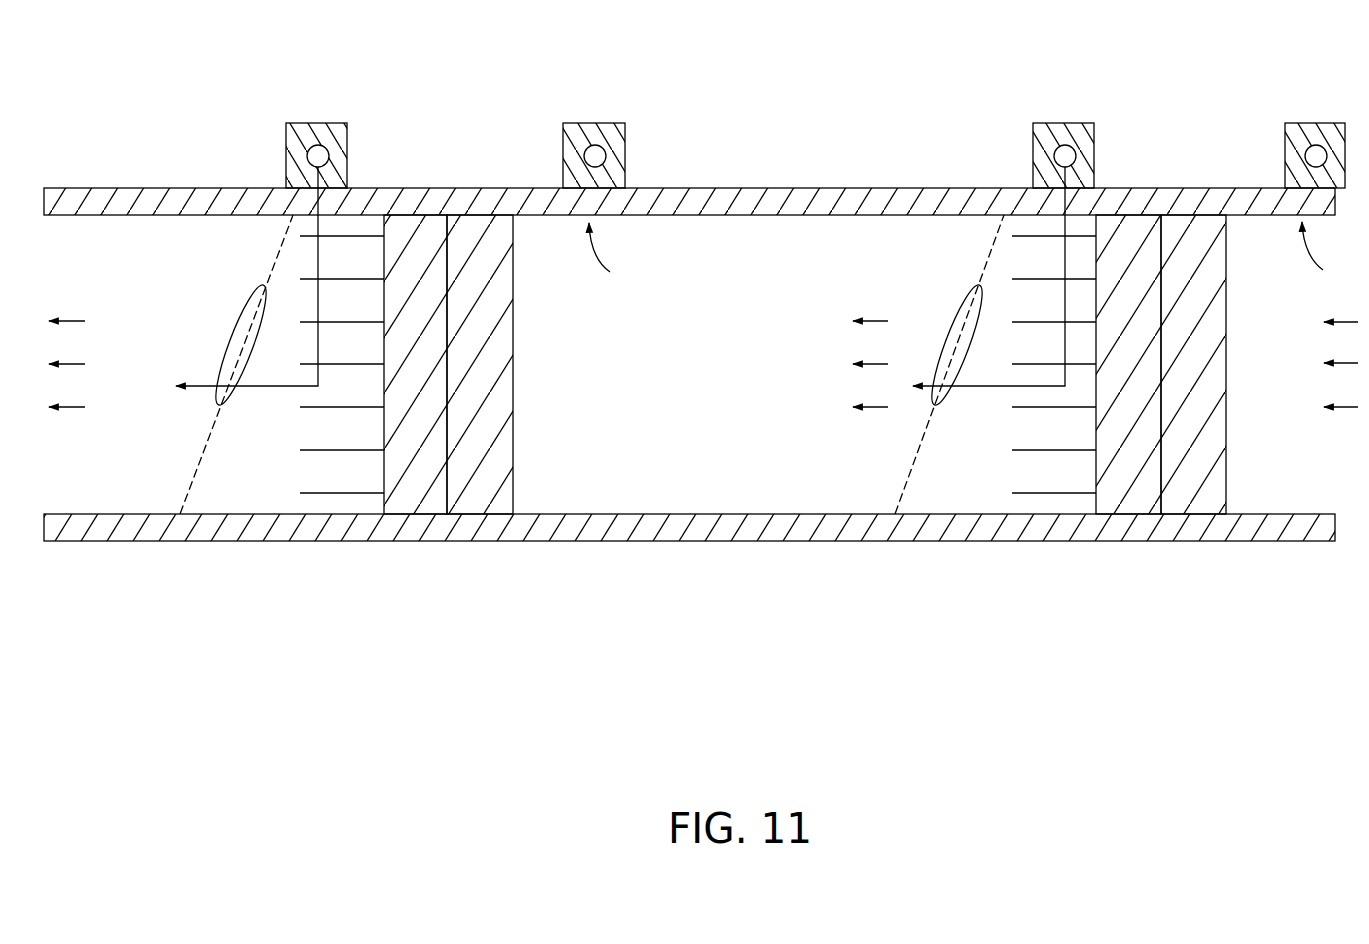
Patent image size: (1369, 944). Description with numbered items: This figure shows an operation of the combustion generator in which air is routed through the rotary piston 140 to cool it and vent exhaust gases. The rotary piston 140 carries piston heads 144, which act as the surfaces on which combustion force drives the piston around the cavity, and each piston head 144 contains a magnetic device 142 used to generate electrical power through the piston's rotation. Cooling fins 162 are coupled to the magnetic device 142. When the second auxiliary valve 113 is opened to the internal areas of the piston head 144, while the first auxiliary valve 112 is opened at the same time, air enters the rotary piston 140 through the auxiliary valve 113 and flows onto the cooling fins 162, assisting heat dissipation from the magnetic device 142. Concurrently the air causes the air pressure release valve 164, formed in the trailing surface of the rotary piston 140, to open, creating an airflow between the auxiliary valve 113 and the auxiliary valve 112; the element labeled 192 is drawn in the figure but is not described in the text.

The second roller 112 is at (595, 156).
The first roller 113 is at (313, 119).
The plate 140 is at (418, 186).
The first layer 142 is at (1121, 230).
The second layer 144 is at (478, 211).
The field lines 162 is at (362, 231).
The lens 164 is at (235, 316).
The probe 192 is at (1058, 173).